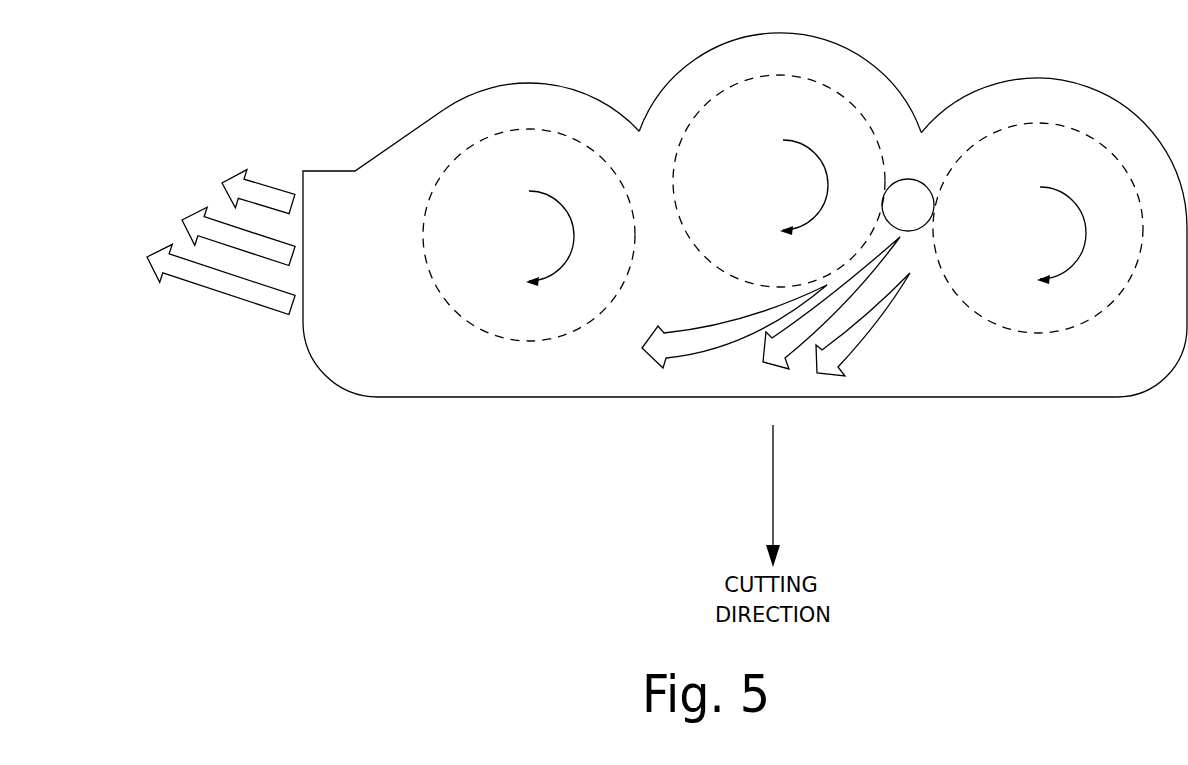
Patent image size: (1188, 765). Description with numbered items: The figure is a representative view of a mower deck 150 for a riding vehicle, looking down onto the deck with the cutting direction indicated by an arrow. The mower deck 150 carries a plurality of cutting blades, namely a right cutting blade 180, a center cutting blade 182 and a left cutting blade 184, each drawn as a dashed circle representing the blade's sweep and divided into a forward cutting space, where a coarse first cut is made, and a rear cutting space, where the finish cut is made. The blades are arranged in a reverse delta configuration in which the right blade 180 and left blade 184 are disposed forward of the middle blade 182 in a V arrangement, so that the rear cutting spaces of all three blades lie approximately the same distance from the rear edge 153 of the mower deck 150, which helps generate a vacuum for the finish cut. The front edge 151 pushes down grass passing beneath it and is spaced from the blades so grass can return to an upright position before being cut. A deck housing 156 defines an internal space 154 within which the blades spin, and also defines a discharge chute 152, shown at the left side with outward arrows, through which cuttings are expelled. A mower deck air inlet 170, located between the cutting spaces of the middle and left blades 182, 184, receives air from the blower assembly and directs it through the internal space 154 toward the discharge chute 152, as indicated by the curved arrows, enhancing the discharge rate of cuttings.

The mower deck 150 is at (667, 254).
The front edge 151 is at (683, 397).
The discharge chute 152 is at (303, 248).
The rear edge 153 is at (716, 46).
The internal space 154 is at (678, 312).
The deck housing 156 is at (922, 397).
The mower deck air inlet 170 is at (921, 182).
The right cutting blade 180 is at (450, 302).
The center cutting blade 182 is at (673, 180).
The left cutting blade 184 is at (1093, 138).